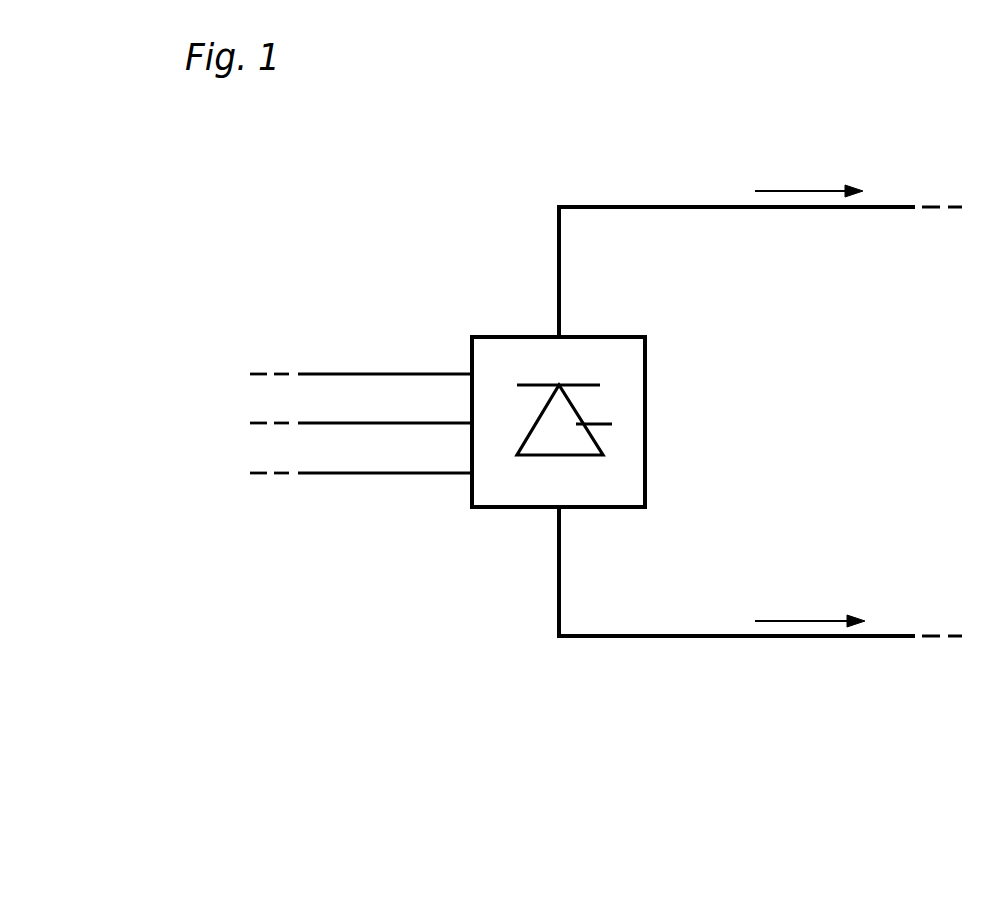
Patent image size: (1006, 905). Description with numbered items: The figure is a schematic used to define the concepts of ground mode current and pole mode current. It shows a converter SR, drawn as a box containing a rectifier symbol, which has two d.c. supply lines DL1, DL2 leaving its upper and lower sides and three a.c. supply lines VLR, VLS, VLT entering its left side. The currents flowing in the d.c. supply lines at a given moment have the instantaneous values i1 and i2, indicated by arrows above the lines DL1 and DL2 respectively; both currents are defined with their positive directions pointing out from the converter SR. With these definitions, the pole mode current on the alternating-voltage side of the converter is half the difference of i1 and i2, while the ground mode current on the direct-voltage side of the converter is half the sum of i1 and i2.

The converter SR is at (645, 407).
The a.c. supply line VLR is at (325, 375).
The a.c. supply line VLS is at (325, 425).
The a.c. supply line VLT is at (325, 473).
The d.c. supply line DL1 is at (928, 205).
The d.c. supply line DL2 is at (930, 640).
The instantaneous current value i1 is at (809, 175).
The instantaneous current value i2 is at (810, 605).